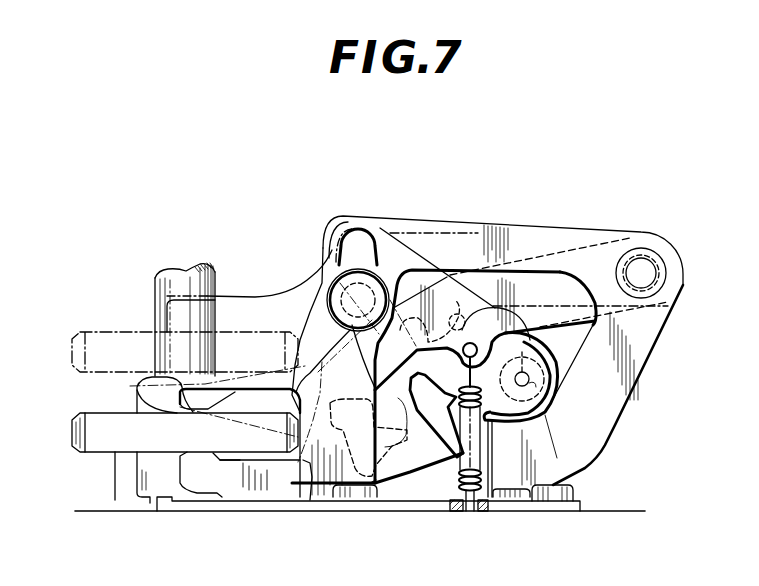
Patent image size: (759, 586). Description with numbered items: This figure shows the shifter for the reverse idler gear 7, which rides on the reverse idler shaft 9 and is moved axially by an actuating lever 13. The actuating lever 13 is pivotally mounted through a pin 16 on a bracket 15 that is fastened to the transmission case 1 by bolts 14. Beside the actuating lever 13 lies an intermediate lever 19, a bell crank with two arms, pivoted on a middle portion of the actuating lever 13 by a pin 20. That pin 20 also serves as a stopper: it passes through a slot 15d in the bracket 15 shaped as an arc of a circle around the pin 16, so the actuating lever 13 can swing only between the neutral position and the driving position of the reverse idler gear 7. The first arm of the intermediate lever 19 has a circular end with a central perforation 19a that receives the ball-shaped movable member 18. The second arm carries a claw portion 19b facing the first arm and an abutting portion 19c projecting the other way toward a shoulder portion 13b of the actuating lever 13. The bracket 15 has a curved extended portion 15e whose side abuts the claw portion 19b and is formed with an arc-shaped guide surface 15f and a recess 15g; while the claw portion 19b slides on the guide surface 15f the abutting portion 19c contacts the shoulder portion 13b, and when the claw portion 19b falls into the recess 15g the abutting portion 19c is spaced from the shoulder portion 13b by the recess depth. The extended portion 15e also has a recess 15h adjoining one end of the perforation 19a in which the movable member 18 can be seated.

The transmission case 1 is at (633, 511).
The reverse idler gear 7 is at (115, 455).
The reverse idler shaft 9 is at (168, 278).
The actuating lever 13 is at (557, 250).
The shoulder portion 13b is at (335, 470).
The bolts 14 is at (337, 490).
The bracket 15 is at (466, 222).
The slot 15d is at (348, 250).
The extended portion 15e is at (455, 415).
The guide surface 15f is at (438, 455).
The recess 15g is at (433, 445).
The recess 15h is at (522, 386).
The pin 16 is at (643, 248).
The movable member 18 is at (535, 402).
The intermediate lever 19 is at (416, 290).
The perforation 19a is at (530, 385).
The claw portion 19b is at (463, 476).
The abutting portion 19c is at (372, 484).
The pin 20 is at (332, 288).